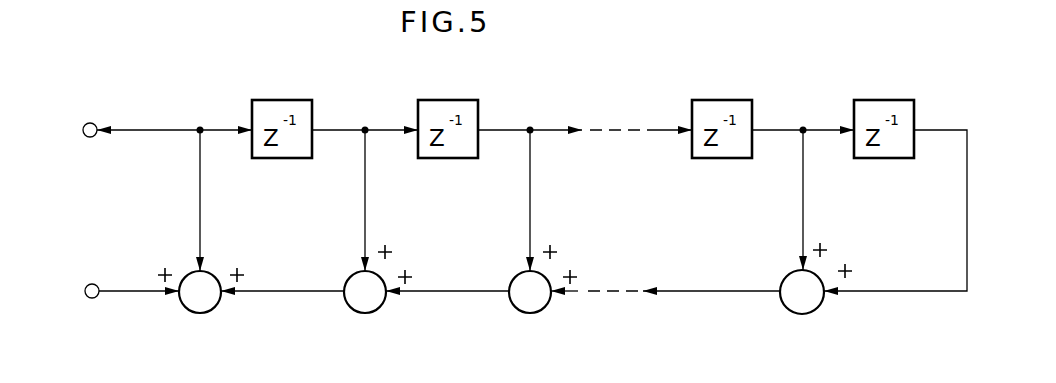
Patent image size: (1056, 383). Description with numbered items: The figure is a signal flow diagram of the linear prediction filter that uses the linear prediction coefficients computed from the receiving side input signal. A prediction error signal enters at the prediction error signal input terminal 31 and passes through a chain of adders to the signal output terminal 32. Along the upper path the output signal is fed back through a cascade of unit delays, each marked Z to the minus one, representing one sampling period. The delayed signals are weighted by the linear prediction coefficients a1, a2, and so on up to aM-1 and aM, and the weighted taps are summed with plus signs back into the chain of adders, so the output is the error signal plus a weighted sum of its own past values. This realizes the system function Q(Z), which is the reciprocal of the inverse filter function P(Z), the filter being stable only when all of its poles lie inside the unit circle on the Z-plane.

The prediction error signal input terminal 31 is at (93, 298).
The signal output terminal 32 is at (92, 123).
The linear prediction coefficient a1 is at (293, 200).
The linear prediction coefficient a2 is at (541, 200).
The linear prediction coefficient aM-1 is at (822, 200).
The linear prediction coefficient aM is at (910, 212).